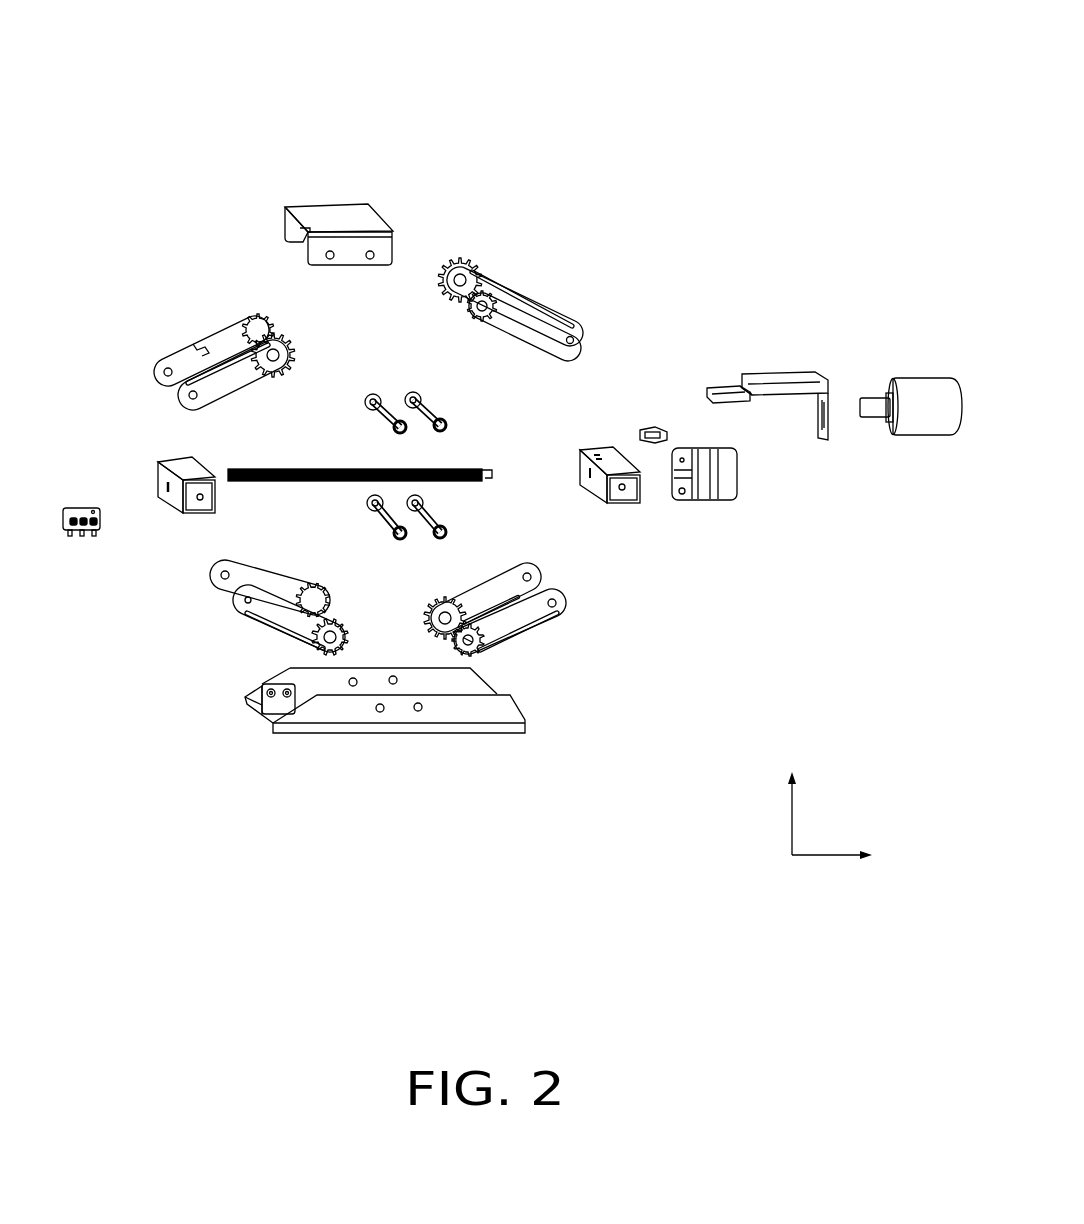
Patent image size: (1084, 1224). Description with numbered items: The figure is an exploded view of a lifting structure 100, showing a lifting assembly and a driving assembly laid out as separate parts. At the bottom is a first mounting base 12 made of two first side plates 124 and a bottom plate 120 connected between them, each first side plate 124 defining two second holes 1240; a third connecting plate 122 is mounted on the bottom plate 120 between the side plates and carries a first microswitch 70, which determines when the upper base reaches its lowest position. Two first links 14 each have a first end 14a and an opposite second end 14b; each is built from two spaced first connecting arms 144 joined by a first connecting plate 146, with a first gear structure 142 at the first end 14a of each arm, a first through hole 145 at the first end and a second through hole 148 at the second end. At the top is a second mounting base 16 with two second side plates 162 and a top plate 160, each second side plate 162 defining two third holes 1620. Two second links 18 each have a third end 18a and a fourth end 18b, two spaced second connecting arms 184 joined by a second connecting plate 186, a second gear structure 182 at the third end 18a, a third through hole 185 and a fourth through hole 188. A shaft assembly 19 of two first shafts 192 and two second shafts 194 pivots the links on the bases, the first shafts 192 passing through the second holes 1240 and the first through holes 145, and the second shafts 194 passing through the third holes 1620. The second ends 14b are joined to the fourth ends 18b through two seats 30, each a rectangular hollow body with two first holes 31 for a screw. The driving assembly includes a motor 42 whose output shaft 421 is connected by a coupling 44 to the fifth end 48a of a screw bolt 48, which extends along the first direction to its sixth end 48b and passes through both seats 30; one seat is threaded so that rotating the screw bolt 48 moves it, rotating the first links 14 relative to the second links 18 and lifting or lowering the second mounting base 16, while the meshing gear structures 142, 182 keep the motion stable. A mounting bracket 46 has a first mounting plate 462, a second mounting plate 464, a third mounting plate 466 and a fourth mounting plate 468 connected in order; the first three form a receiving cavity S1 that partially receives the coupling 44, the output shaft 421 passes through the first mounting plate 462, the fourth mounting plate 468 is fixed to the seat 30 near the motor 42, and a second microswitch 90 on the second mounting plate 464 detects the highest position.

The lifting structure 100 is at (579, 29).
The first mounting base 12 is at (336, 753).
The bottom plate 120 is at (211, 741).
The third connecting plate 122 is at (270, 710).
The first side plate 124 is at (393, 732).
The second hole 1240 is at (418, 712).
The first link 14 is at (403, 647).
The first end 14a is at (341, 626).
The second end 14b is at (238, 600).
The first gear structure 142 is at (470, 643).
The first connecting arm 144 is at (498, 633).
The first through hole 145 is at (480, 650).
The first connecting plate 146 is at (532, 629).
The second through hole 148 is at (556, 609).
The second mounting base 16 is at (398, 215).
The top plate 160 is at (365, 221).
The second side plate 162 is at (383, 215).
The third hole 1620 is at (330, 250).
The second link 18 is at (329, 324).
The third end 18a is at (466, 307).
The fourth end 18b is at (578, 328).
The second gear structure 182 is at (268, 320).
The second connecting arm 184 is at (167, 357).
The third through hole 185 is at (160, 372).
The second connecting plate 186 is at (203, 348).
The fourth through hole 188 is at (227, 336).
The shaft assembly 19 is at (439, 444).
The first shaft 192 is at (380, 512).
The second shaft 194 is at (374, 394).
The seat 30 is at (170, 458).
The first hole 31 is at (623, 492).
The motor 42 is at (896, 441).
The output shaft 421 is at (861, 437).
The coupling 44 is at (727, 492).
The mounting bracket 46 is at (780, 352).
The first mounting plate 462 is at (857, 375).
The second mounting plate 464 is at (787, 372).
The third mounting plate 466 is at (738, 382).
The fourth mounting plate 468 is at (711, 383).
The screw bolt 48 is at (341, 450).
The fifth end 48a is at (482, 469).
The sixth end 48b is at (224, 470).
The first microswitch 70 is at (86, 507).
The second microswitch 90 is at (656, 427).
The receiving cavity S1 is at (791, 420).